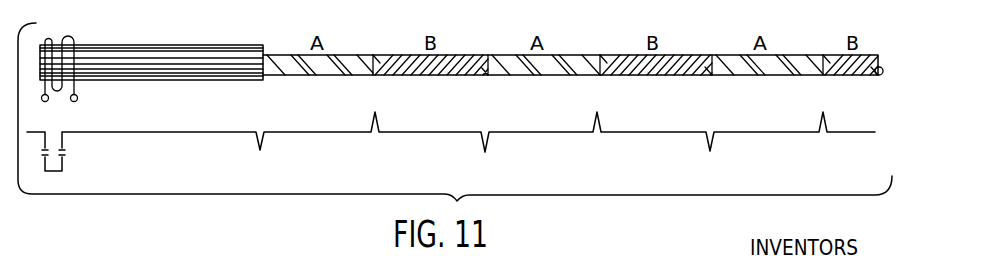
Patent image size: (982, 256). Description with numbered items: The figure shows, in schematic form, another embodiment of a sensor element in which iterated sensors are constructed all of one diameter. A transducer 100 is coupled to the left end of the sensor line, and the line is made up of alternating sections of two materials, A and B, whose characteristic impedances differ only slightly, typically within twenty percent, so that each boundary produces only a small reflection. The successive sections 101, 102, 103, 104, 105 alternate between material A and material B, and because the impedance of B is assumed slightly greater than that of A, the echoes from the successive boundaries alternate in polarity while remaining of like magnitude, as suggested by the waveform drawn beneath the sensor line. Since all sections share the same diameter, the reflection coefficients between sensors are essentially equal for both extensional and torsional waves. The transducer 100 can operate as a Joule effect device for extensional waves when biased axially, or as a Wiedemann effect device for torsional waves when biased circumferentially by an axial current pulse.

The transducer 100 is at (152, 80).
The first record track section A 101 is at (298, 75).
The record track section B 102 is at (413, 75).
The record track section A 103 is at (517, 75).
The record track section B 104 is at (632, 75).
The record track section A 105 is at (733, 75).